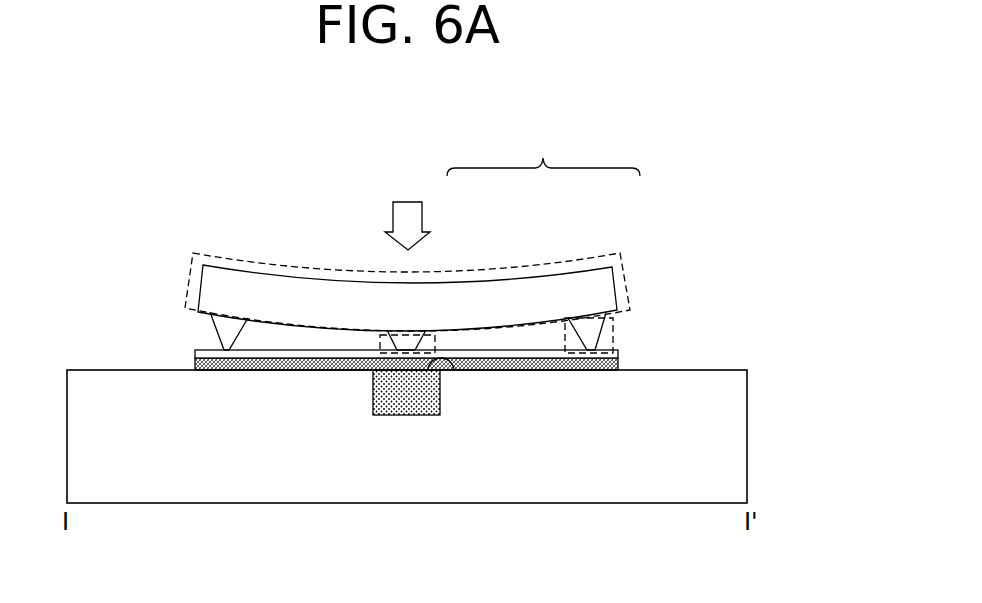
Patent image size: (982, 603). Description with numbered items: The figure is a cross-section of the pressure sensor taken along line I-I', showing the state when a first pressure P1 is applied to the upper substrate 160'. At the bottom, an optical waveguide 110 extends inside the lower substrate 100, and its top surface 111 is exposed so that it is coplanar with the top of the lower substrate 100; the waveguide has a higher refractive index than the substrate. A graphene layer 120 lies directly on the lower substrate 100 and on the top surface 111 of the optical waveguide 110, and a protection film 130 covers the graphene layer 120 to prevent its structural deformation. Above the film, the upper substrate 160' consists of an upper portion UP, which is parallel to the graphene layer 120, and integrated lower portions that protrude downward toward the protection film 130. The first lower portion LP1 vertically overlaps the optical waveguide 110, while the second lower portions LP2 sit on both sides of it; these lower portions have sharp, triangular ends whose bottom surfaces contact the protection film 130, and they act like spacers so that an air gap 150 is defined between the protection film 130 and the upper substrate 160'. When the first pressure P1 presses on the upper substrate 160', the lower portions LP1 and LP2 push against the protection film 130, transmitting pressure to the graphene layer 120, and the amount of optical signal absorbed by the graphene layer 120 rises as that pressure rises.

The lower substrate 100 is at (733, 437).
The optical waveguide 110 is at (392, 407).
The top surface of the optical waveguide 111 is at (452, 368).
The graphene layer 120 is at (196, 363).
The protection film 130 is at (196, 354).
The air gap 150 is at (270, 340).
The upper substrate 160' is at (543, 152).
The first lower portion LP1 is at (407, 332).
The second lower portions LP2 is at (586, 318).
The upper portion UP is at (519, 265).
The first pressure P1 is at (407, 210).